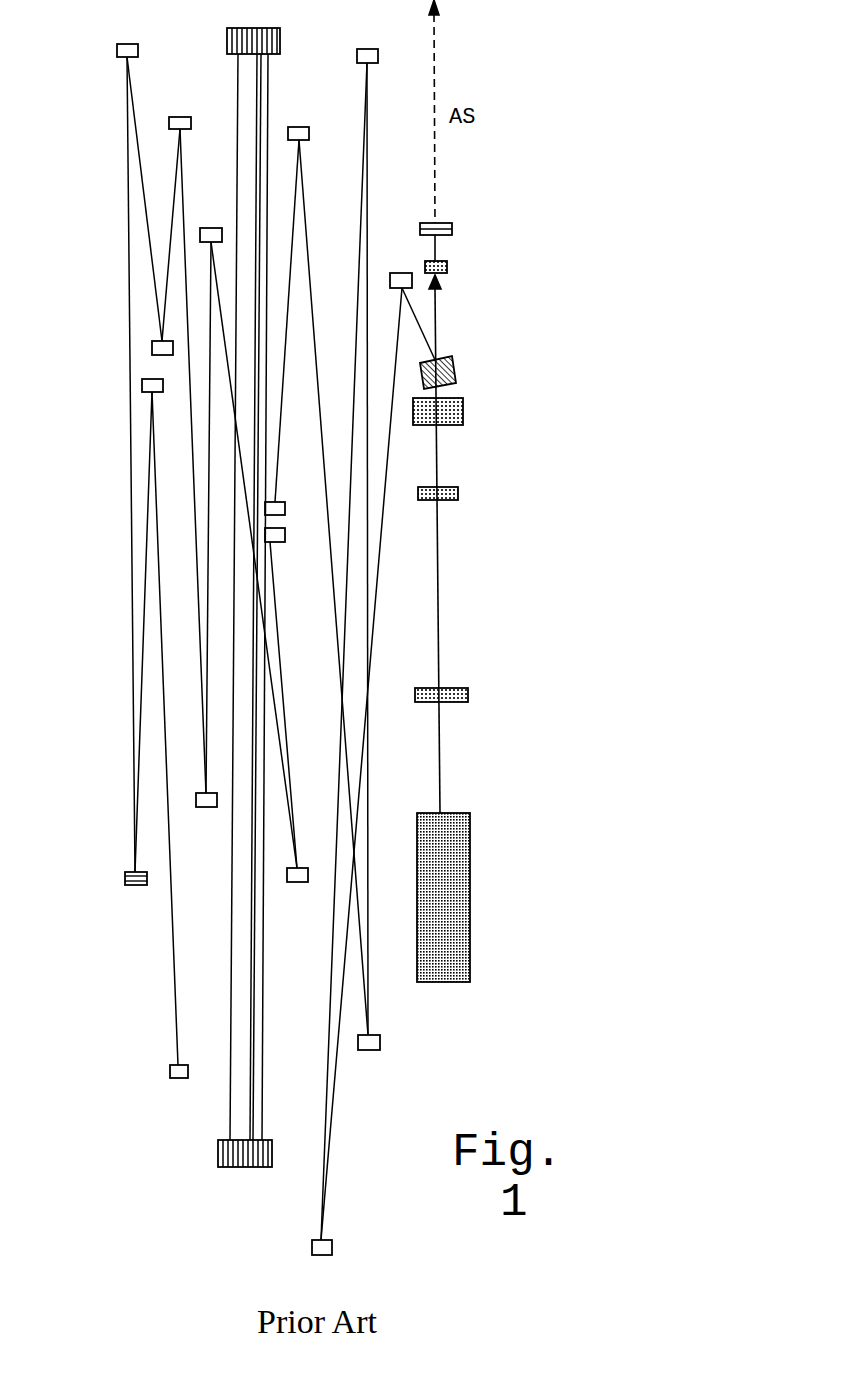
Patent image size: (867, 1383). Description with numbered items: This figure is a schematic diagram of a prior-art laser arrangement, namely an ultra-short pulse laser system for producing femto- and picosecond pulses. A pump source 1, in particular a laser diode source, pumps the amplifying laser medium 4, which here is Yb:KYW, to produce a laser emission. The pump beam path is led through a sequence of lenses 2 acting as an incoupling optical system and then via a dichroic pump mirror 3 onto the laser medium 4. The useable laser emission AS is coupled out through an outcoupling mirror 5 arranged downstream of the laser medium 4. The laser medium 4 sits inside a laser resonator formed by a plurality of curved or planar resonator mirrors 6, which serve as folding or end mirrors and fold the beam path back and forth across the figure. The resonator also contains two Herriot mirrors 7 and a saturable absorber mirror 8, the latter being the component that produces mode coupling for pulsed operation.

The pump source 1 is at (474, 897).
The lenses 2 is at (468, 575).
The dichroic pump mirror 3 is at (468, 366).
The amplifying laser medium 4 is at (471, 254).
The outcoupling mirror 5 is at (468, 203).
The resonator mirrors 6 is at (248, 636).
The Herriot mirrors 7 is at (266, 609).
The saturable absorber mirror 8 is at (104, 867).